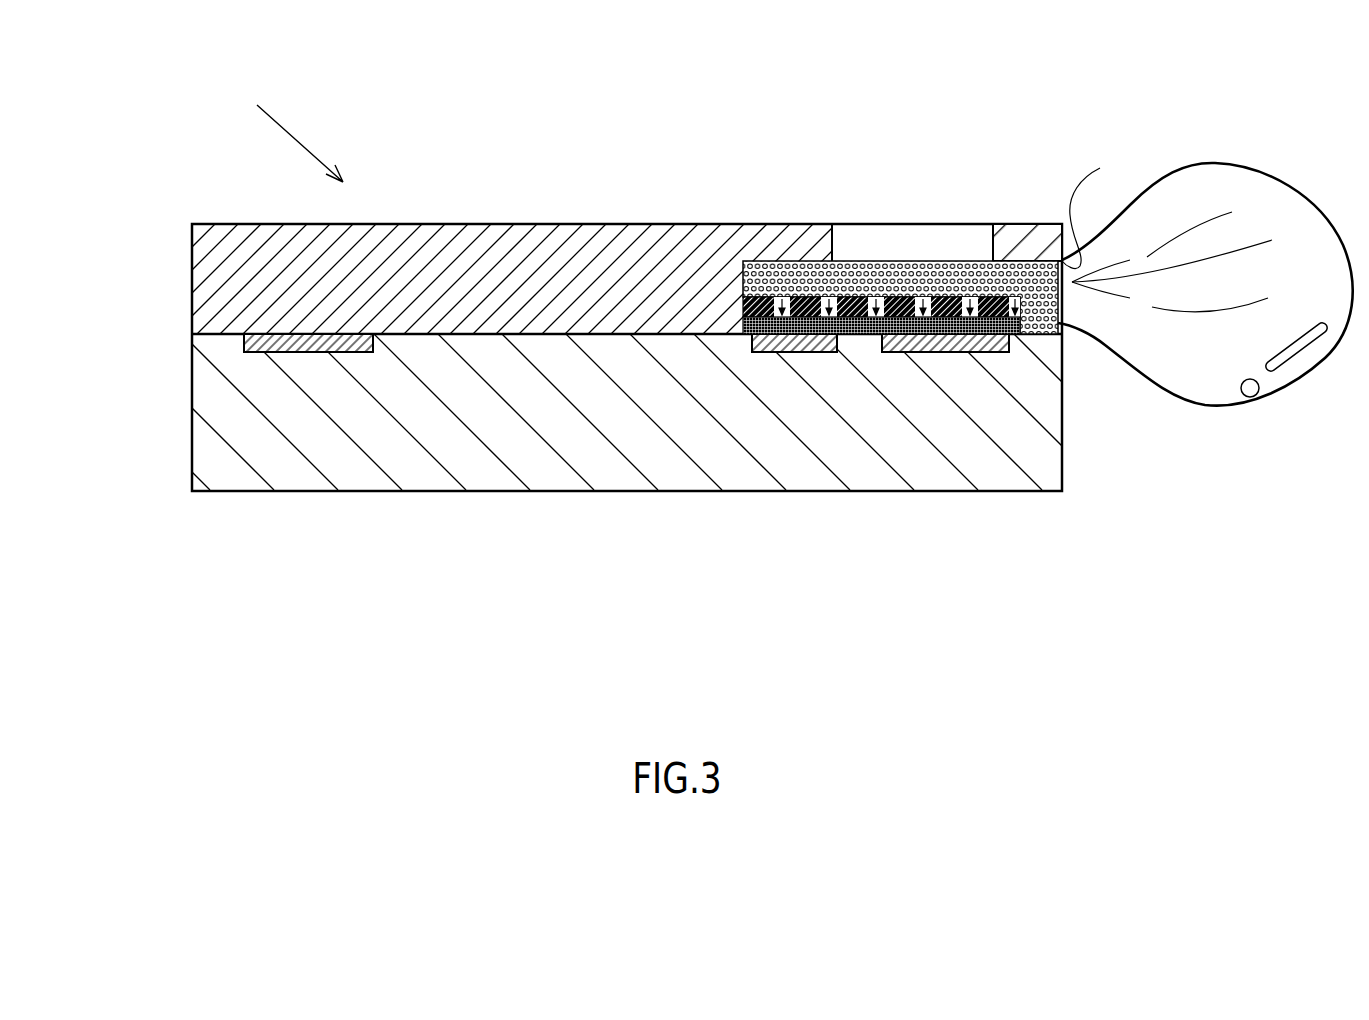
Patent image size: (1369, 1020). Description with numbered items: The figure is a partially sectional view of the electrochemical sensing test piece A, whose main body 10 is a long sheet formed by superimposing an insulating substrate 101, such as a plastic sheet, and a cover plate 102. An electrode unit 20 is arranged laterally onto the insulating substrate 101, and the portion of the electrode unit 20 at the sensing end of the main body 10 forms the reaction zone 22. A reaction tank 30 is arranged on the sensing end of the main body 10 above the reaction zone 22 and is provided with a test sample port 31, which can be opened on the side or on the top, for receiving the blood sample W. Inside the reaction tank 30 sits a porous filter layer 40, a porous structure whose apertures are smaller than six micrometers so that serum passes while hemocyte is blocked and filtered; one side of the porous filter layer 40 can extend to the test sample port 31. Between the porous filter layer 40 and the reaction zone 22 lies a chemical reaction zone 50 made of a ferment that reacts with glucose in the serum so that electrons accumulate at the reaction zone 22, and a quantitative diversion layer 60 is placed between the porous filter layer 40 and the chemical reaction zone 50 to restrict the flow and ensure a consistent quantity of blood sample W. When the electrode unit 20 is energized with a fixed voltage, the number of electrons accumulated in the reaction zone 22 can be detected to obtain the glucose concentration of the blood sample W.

The main body 10 is at (82, 305).
The insulating substrate 101 is at (193, 388).
The cover plate 102 is at (192, 285).
The electrode unit 20 is at (332, 352).
The reaction zone 22 is at (950, 352).
The reaction tank 30 is at (910, 267).
The test sample port 31 is at (988, 238).
The porous filter layer 40 is at (763, 262).
The chemical reaction zone 50 is at (740, 327).
The quantitative diversion layer 60 is at (740, 303).
The electrochemical sensing test piece A is at (285, 128).
The blood sample W is at (1220, 400).